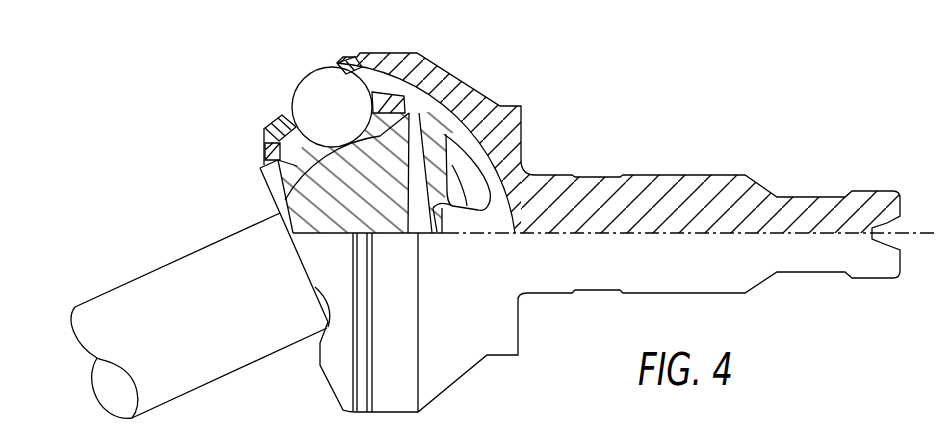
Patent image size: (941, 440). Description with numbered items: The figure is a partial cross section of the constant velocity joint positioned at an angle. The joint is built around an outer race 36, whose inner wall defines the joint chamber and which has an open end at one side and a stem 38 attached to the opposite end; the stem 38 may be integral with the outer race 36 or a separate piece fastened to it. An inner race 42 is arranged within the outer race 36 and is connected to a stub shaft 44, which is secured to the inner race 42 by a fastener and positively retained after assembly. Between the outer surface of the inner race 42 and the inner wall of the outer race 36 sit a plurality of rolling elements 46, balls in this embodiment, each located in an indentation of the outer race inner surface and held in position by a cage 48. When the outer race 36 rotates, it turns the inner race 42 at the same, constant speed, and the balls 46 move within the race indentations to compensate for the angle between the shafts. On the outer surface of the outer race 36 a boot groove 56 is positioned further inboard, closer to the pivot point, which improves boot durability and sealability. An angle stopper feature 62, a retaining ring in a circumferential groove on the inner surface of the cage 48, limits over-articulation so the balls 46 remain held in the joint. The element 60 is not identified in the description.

The outer race 36 is at (437, 370).
The stem 38 is at (657, 190).
The inner race 42 is at (373, 181).
The stub shaft 44 is at (170, 290).
The rolling elements 46 is at (323, 88).
The cage 48 is at (277, 117).
The boot groove 56 is at (358, 55).
The seal lip 60 is at (293, 300).
The angle stopper feature 62 is at (267, 153).